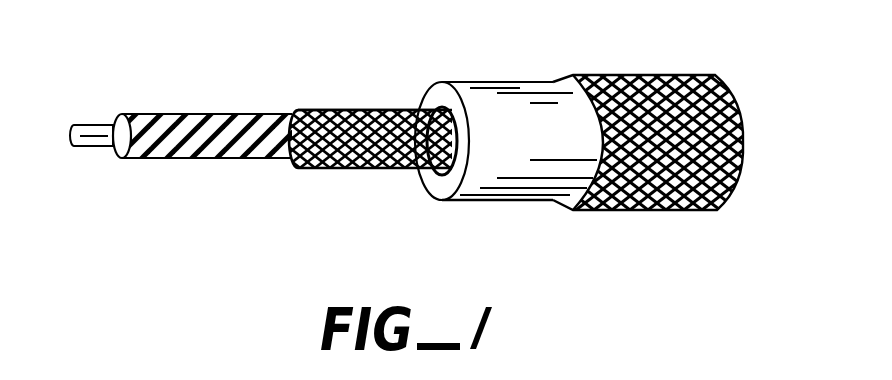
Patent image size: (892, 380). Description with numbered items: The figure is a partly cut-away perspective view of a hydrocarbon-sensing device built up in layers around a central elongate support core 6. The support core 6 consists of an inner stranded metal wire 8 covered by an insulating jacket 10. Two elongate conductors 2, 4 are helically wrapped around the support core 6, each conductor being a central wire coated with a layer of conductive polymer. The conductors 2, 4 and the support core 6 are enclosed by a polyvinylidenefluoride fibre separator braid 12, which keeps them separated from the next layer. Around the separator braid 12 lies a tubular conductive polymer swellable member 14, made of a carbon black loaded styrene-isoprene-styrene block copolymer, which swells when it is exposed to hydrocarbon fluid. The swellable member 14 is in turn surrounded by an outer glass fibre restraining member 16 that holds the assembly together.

The inner stranded metal wire 8 is at (97, 125).
The elongate conductor 2 is at (248, 116).
The central elongate support core 6 is at (132, 160).
The elongate conductor 4 is at (283, 168).
The insulating jacket 10 is at (380, 112).
The separator braid 12 is at (387, 168).
The swellable member 14 is at (557, 147).
The restraining member 16 is at (640, 73).